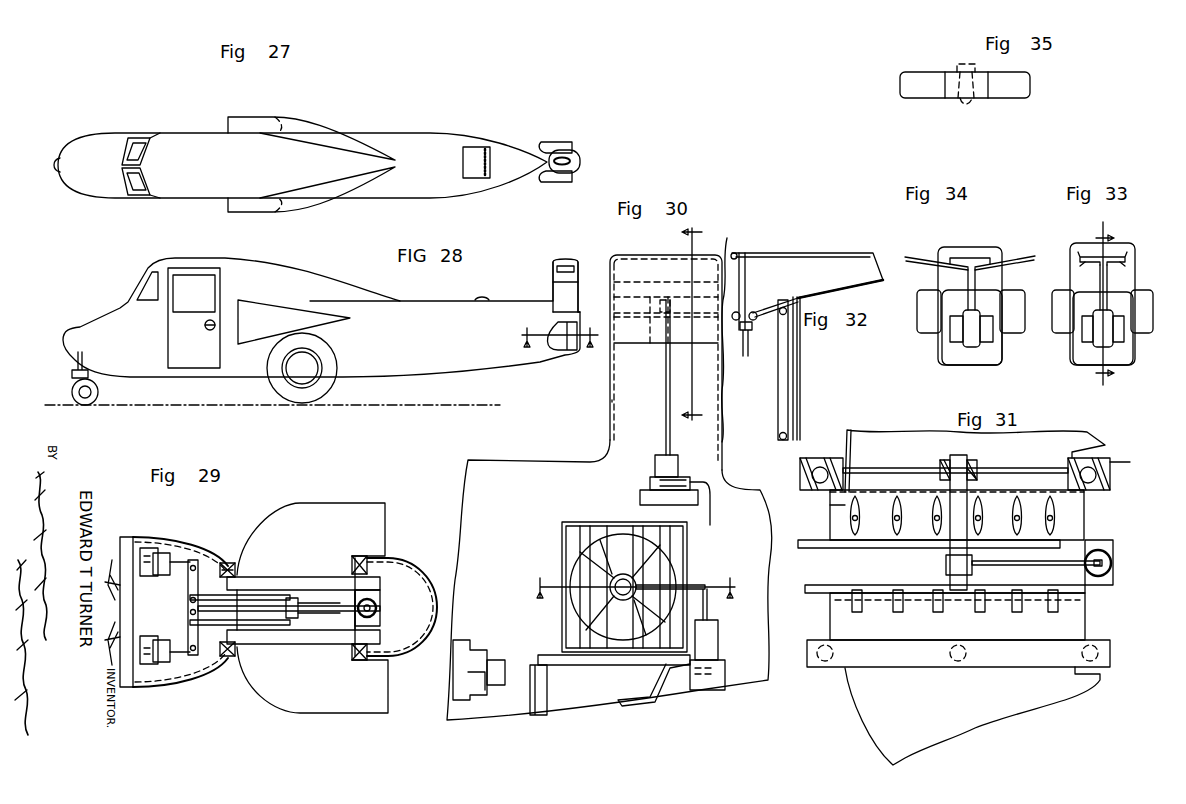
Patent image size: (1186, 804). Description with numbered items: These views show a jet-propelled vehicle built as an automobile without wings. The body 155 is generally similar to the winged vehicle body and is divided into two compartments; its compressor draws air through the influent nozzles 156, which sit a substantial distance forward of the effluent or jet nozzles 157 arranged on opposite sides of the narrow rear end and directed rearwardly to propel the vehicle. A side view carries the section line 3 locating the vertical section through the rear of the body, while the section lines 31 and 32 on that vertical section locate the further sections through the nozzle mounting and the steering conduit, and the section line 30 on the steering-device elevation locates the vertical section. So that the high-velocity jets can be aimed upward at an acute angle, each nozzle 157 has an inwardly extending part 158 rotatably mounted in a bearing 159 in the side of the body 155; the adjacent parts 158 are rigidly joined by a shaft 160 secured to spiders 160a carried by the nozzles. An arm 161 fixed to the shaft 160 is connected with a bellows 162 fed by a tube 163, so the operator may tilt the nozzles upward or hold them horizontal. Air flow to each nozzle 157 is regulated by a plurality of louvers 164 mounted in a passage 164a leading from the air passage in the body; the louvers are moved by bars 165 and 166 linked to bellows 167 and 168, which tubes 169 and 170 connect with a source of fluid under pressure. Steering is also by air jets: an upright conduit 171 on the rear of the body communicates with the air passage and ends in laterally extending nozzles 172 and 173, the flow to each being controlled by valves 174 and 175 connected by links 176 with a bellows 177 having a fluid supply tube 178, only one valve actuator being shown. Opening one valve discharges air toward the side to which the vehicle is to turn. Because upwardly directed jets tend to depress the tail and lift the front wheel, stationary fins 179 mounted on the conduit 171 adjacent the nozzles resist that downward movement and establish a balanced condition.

In FIG. 28, the section line 3- 3 is at (559, 337).
In FIG. 33, the section line 30- 30 is at (1107, 306).
In FIG. 30, the section line 31- 31 is at (634, 584).
In FIG. 30, the section line 32- 32 is at (699, 325).
In FIG. 27, the body 155 is at (379, 185).
In FIG. 28, the body 155 is at (241, 366).
In FIG. 29, the body 155 is at (155, 537).
In FIG. 30, the body 155 is at (526, 712).
In FIG. 33, the body 155 is at (1102, 304).
In FIG. 34, the body 155 is at (972, 357).
In FIG. 35, the body 155 is at (958, 67).
In FIG. 27, the influent nozzles 156 is at (247, 125).
In FIG. 28, the influent nozzles 156 is at (260, 316).
In FIG. 27, the effluent or jet nozzles 157 is at (550, 142).
In FIG. 28, the effluent or jet nozzles 157 is at (553, 341).
In FIG. 29, the effluent or jet nozzles 157 is at (355, 515).
In FIG. 31, the effluent or jet nozzles 157 is at (905, 446).
In FIG. 33, the effluent or jet nozzles 157 is at (1147, 333).
In FIG. 34, the effluent or jet nozzles 157 is at (926, 326).
In FIG. 31, the inwardly extending parts 158 is at (846, 480).
In FIG. 29, the bearings 159 is at (366, 560).
In FIG. 31, the bearings 159 is at (820, 470).
In FIG. 29, the shaft 160 is at (298, 618).
In FIG. 30, the shaft 160 is at (640, 584).
In FIG. 31, the shaft 160 is at (957, 535).
In FIG. 30, the spiders 160a is at (600, 574).
In FIG. 31, the spiders 160a is at (1012, 470).
In FIG. 29, the arm 161 is at (322, 604).
In FIG. 30, the arm 161 is at (690, 587).
In FIG. 31, the arm 161 is at (1010, 575).
In FIG. 29, the bellows 162 is at (378, 609).
In FIG. 30, the bellows 162 is at (710, 636).
In FIG. 31, the bellows 162 is at (1114, 563).
In FIG. 30, the tube 163 is at (658, 704).
In FIG. 31, the louvers 164 is at (1057, 510).
In FIG. 29, the passage 164a is at (262, 583).
In FIG. 31, the passage 164a is at (842, 516).
In FIG. 29, the bar 165 is at (223, 597).
In FIG. 30, the bar 165 is at (590, 660).
In FIG. 31, the bar 165 is at (927, 555).
In FIG. 29, the bar 166 is at (220, 624).
In FIG. 31, the bar 166 is at (815, 590).
In FIG. 29, the bellows 167 is at (160, 568).
In FIG. 30, the bellows 167 is at (496, 666).
In FIG. 29, the bellows 168 is at (161, 646).
In FIG. 29, the tube 169 is at (116, 584).
In FIG. 29, the tube 170 is at (120, 626).
In FIG. 28, the upright conduit 171 is at (562, 301).
In FIG. 29, the upright conduit 171 is at (410, 567).
In FIG. 30, the upright conduit 171 is at (628, 403).
In FIG. 32, the upright conduit 171 is at (797, 399).
In FIG. 33, the upright conduit 171 is at (1103, 290).
In FIG. 34, the upright conduit 171 is at (975, 285).
In FIG. 32, the laterally extending nozzle 172 is at (808, 262).
In FIG. 33, the laterally extending nozzle 172 is at (1116, 258).
In FIG. 34, the laterally extending nozzle 172 is at (970, 270).
In FIG. 35, the laterally extending nozzle 172 is at (978, 93).
In FIG. 32, the laterally extending nozzle 173 is at (738, 253).
In FIG. 33, the laterally extending nozzle 173 is at (1090, 259).
In FIG. 32, the valve 174 is at (772, 300).
In FIG. 32, the valve 175 is at (739, 330).
In FIG. 30, the links 176 is at (668, 393).
In FIG. 32, the links 176 is at (783, 384).
In FIG. 30, the bellows 177 is at (660, 465).
In FIG. 30, the fluid supply tube 178 is at (712, 503).
In FIG. 34, the stationary fins 179 is at (918, 258).
In FIG. 35, the stationary fins 179 is at (915, 94).